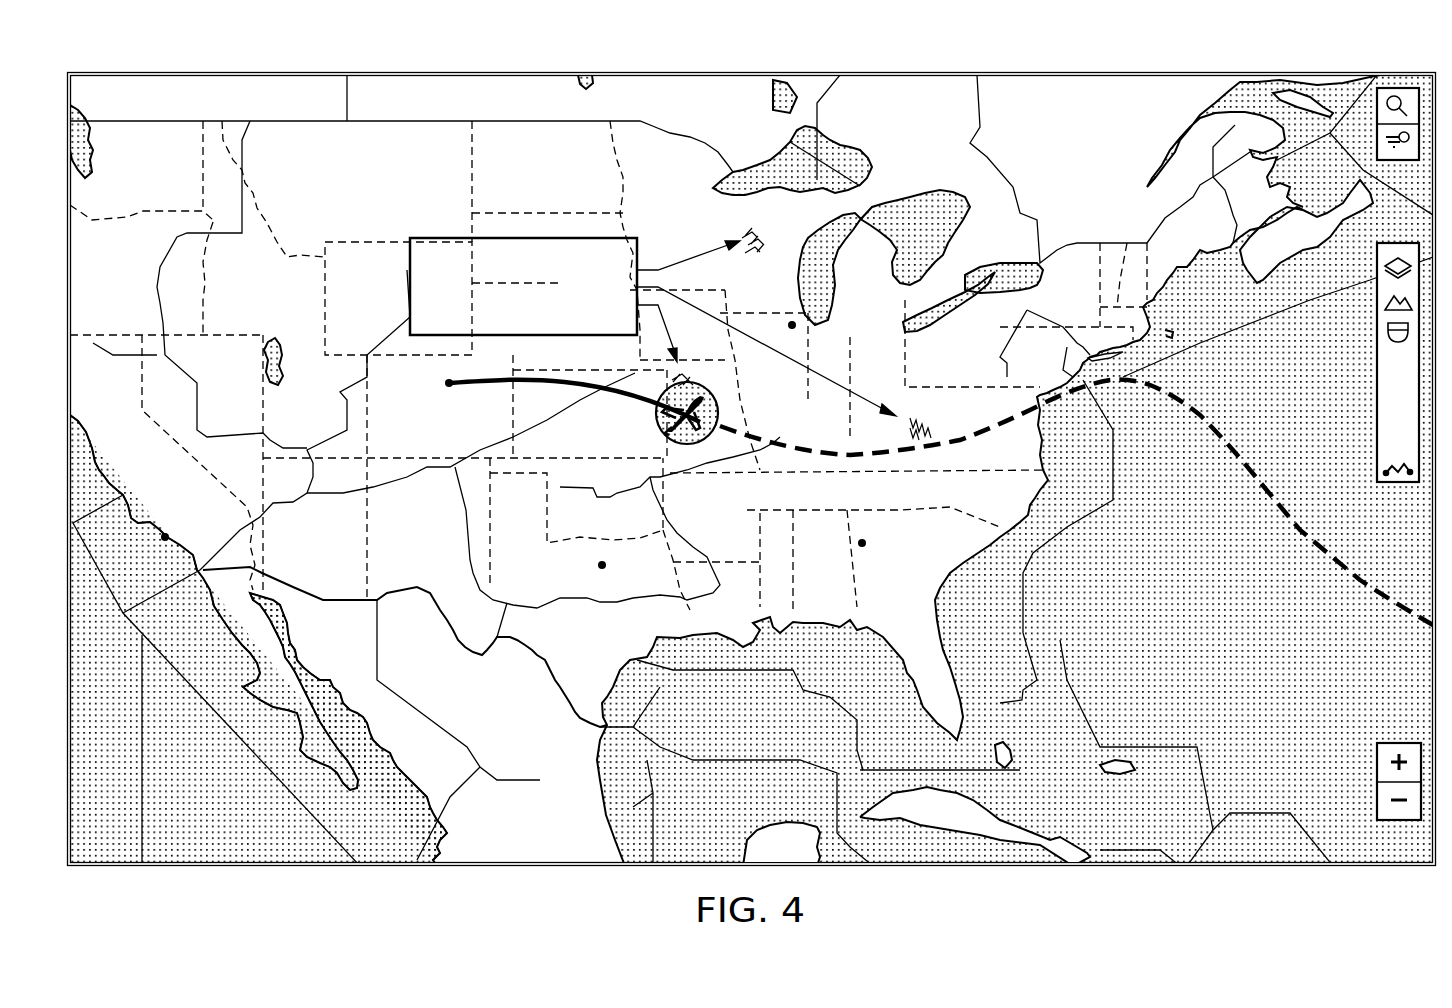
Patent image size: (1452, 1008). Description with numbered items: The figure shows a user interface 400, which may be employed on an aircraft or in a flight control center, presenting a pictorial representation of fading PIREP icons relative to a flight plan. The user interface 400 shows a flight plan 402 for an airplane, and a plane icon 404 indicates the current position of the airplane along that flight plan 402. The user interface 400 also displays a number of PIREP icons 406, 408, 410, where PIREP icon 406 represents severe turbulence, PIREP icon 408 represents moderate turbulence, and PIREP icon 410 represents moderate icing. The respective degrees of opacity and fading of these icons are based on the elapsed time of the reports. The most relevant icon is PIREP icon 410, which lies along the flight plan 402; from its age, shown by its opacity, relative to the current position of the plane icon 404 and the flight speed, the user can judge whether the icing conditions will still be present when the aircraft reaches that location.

The user interface 400 is at (893, 72).
The flight plan 402 is at (1290, 482).
The plane icon 404 is at (656, 418).
The PIREP icon 406 is at (748, 234).
The PIREP icon 408 is at (697, 372).
The PIREP icon 410 is at (940, 423).